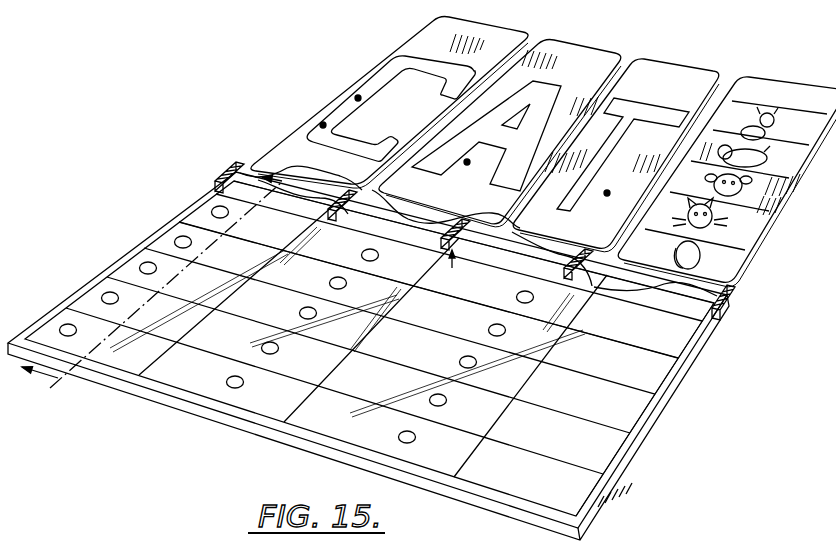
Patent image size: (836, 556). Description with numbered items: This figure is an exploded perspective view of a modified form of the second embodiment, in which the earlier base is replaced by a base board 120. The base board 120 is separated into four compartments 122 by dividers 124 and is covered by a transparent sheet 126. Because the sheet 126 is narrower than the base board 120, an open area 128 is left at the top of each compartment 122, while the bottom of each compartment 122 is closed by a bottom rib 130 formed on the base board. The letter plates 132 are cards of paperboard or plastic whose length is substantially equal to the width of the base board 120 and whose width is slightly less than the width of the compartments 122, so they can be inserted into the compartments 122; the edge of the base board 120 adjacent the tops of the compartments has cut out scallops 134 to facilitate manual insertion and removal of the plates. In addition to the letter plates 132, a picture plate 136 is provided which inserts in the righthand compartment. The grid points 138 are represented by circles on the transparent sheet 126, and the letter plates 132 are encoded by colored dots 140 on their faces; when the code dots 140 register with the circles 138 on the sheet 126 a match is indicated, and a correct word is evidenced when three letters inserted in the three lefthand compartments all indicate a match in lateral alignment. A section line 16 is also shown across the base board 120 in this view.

The section line 16- 16 is at (168, 286).
The base board 120 is at (657, 417).
The compartments 122 is at (233, 192).
The dividers 124 is at (335, 215).
The transparent sheet 126 is at (645, 303).
The open area 128 is at (717, 293).
The bottom rib 130 is at (200, 387).
The letter plates 132 is at (620, 57).
The cut out scallops 134 is at (423, 197).
The picture plate 136 is at (775, 100).
The grid points 138 is at (69, 324).
The colored dots 140 is at (323, 125).